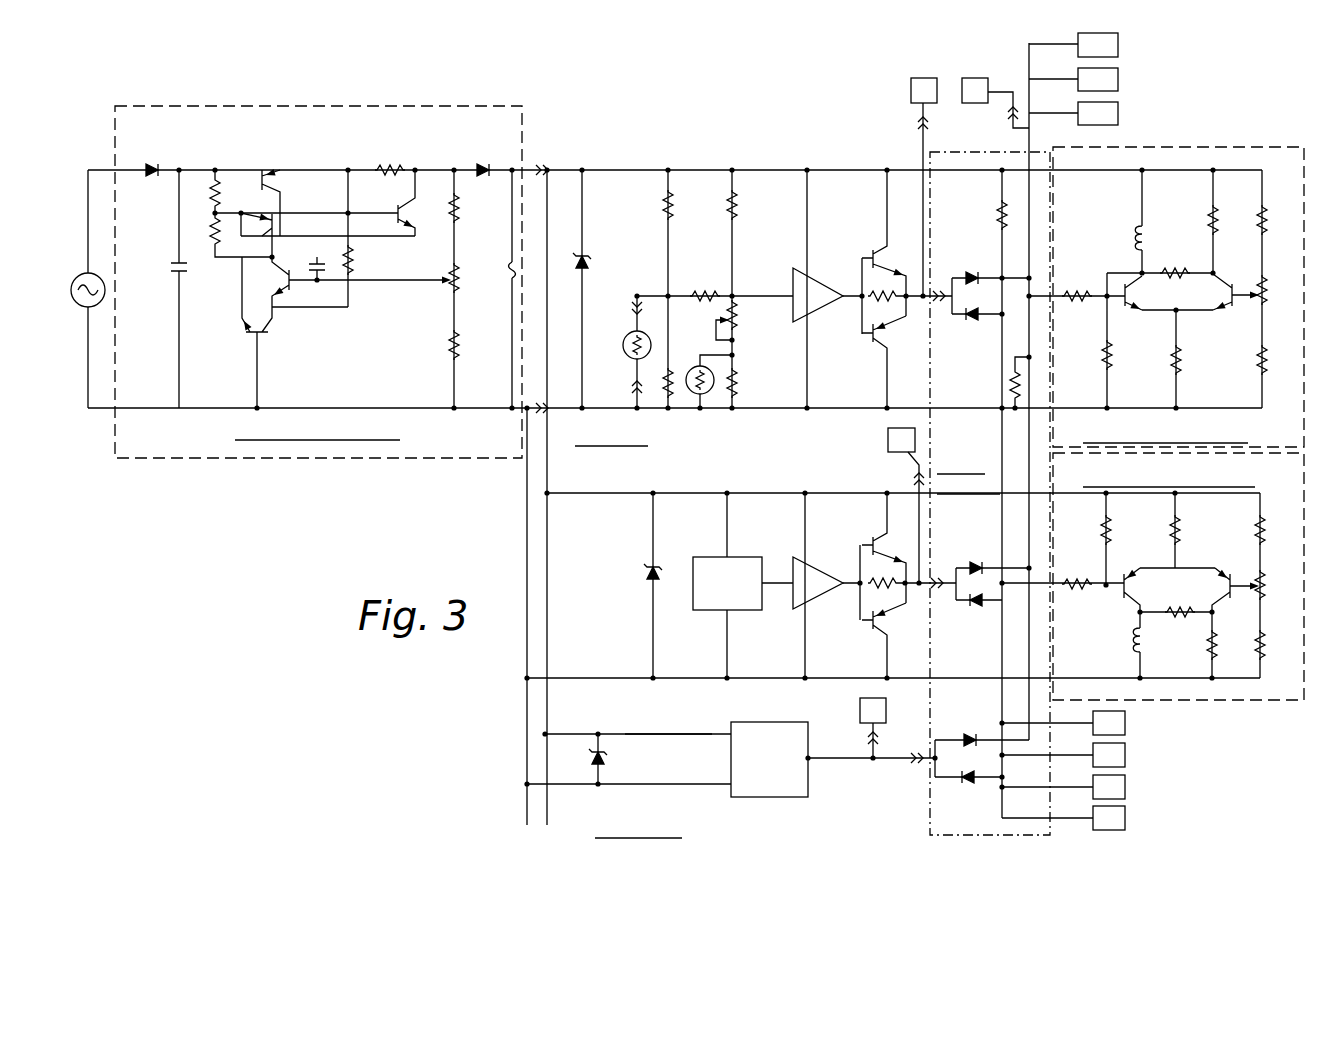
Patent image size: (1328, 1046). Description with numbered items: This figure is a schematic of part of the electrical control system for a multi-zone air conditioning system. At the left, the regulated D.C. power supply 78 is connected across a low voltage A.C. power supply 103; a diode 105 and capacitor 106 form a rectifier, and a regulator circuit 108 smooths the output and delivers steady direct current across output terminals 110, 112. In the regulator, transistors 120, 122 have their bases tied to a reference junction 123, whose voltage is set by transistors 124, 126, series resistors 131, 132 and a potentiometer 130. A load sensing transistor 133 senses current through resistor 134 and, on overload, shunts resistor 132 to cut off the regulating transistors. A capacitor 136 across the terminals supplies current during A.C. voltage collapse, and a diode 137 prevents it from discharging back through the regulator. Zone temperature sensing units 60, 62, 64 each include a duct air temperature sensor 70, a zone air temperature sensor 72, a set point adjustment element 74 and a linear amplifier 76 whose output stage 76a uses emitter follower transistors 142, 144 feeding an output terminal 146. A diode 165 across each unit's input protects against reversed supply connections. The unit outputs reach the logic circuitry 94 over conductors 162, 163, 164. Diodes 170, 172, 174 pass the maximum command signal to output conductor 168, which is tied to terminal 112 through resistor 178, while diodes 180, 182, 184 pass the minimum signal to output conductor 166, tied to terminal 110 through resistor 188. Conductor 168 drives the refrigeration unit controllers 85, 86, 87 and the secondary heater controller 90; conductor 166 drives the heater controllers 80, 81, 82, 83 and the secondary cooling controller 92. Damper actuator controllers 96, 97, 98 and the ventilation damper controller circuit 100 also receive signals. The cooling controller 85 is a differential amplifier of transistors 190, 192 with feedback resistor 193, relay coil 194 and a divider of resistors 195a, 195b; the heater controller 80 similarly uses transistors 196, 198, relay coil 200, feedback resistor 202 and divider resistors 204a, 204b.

The zone temperature sensing unit 60 is at (667, 165).
The zone temperature sensing unit 62 is at (634, 484).
The zone temperature sensing unit 64 is at (796, 800).
The duct air temperature sensor 70 is at (627, 338).
The zone air temperature sensor 72 is at (690, 371).
The temperature set point adjustment element 74 is at (736, 326).
The amplifier 76 is at (818, 438).
The output stage 76a is at (860, 423).
The regulated D.C. power supply 78 is at (176, 460).
The heater controller 80 is at (1253, 702).
The heater controller 81 is at (1062, 723).
The heater controller 82 is at (1062, 755).
The heater controller 83 is at (1062, 787).
The refrigeration unit controller 85 is at (1178, 147).
The refrigeration unit controller 86 is at (1073, 113).
The refrigeration unit controller 87 is at (1073, 79).
The secondary heater controller 90 is at (1073, 45).
The secondary cooling controller 92 is at (1063, 818).
The logic circuitry 94 is at (1001, 152).
The damper actuator controller 96 is at (924, 187).
The damper actuator controller 97 is at (906, 505).
The damper actuator controller 98 is at (873, 728).
The damper actuator controller circuit 100 is at (995, 103).
The A.C. power supply 103 is at (106, 294).
The diode 105 is at (157, 162).
The capacitor 106 is at (171, 262).
The regulator circuit 108 is at (333, 264).
The power supply output terminal 110 is at (508, 166).
The power supply output terminal 112 is at (511, 412).
The transistor 120 is at (268, 172).
The transistor 122 is at (272, 214).
The junction 123 is at (268, 283).
The transistor 124 is at (314, 284).
The transistor 126 is at (262, 340).
The potentiometer 130 is at (450, 286).
The resistor 131 is at (213, 184).
The resistor 132 is at (212, 250).
The load sensing transistor 133 is at (398, 212).
The resistor 134 is at (390, 165).
The capacitor 136 is at (510, 268).
The diode 137 is at (479, 164).
The transistor 142 is at (871, 253).
The transistor 144 is at (871, 340).
The zone sensor output terminal 146 is at (907, 322).
The conductor 162 is at (964, 275).
The conductor 163 is at (980, 584).
The conductor 164 is at (887, 764).
The diode 165 is at (586, 260).
The output conductor 166 is at (1010, 373).
The output conductor 168 is at (1031, 252).
The diode 170 is at (966, 277).
The diode 172 is at (973, 567).
The diode 174 is at (972, 733).
The resistor 178 is at (1013, 370).
The diode 180 is at (963, 313).
The diode 182 is at (976, 606).
The diode 184 is at (968, 786).
The resistor 188 is at (1000, 216).
The transistor 190 is at (1123, 283).
The transistor 192 is at (1235, 283).
The feedback resistor 193 is at (1168, 272).
The relay coil 194 is at (1136, 244).
The resistor 195a is at (1075, 301).
The resistor 195b is at (1105, 355).
The transistor 196 is at (1122, 600).
The transistor 198 is at (1238, 596).
The relay coil 200 is at (1137, 643).
The feedback resistor 202 is at (1180, 616).
The resistor 204a is at (1109, 540).
The resistor 204b is at (1076, 580).